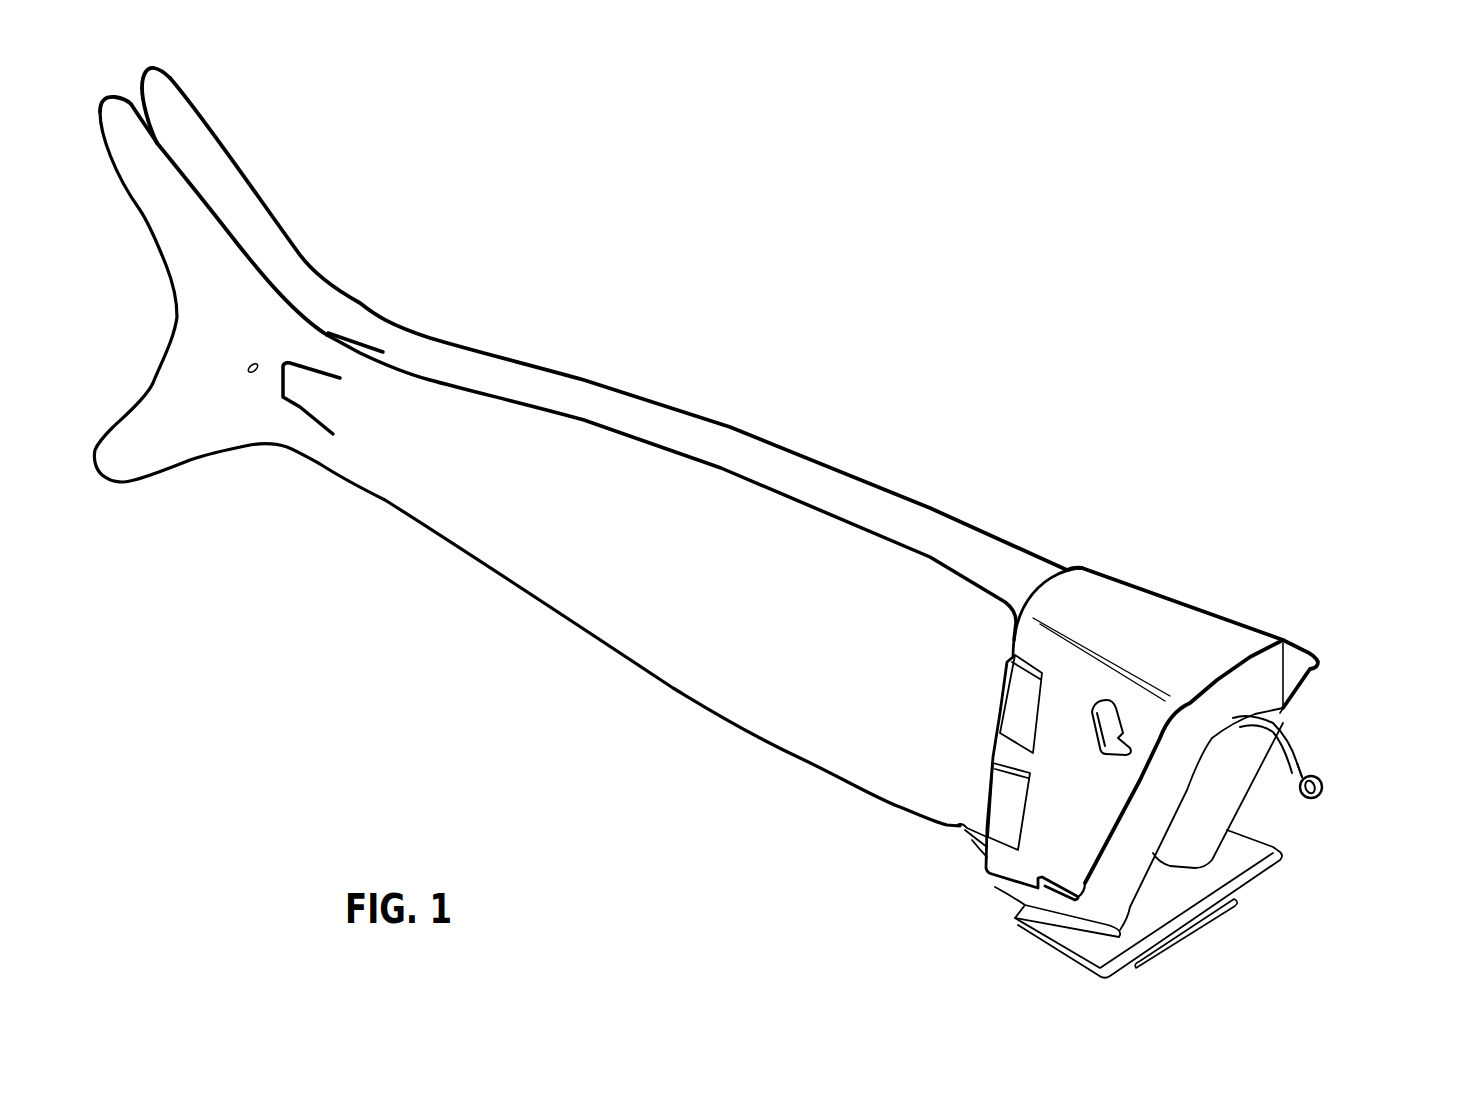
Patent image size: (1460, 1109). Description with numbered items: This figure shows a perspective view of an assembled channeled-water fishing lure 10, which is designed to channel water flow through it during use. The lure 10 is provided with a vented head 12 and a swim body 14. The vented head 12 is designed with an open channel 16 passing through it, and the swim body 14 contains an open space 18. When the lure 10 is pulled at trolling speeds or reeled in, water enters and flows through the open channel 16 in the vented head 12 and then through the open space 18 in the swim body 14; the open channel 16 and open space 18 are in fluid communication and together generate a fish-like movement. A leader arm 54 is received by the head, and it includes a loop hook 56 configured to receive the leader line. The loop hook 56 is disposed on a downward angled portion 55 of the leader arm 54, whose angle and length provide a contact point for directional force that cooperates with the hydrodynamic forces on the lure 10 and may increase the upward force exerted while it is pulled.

The channeled-water fishing lure 10 is at (755, 367).
The vented head 12 is at (1143, 604).
The swim body 14 is at (853, 474).
The open channel 16 is at (1217, 783).
The open space 18 is at (446, 360).
The leader arm 54 is at (1322, 806).
The downward angled portion 55 is at (1297, 747).
The loop hook 56 is at (1325, 790).